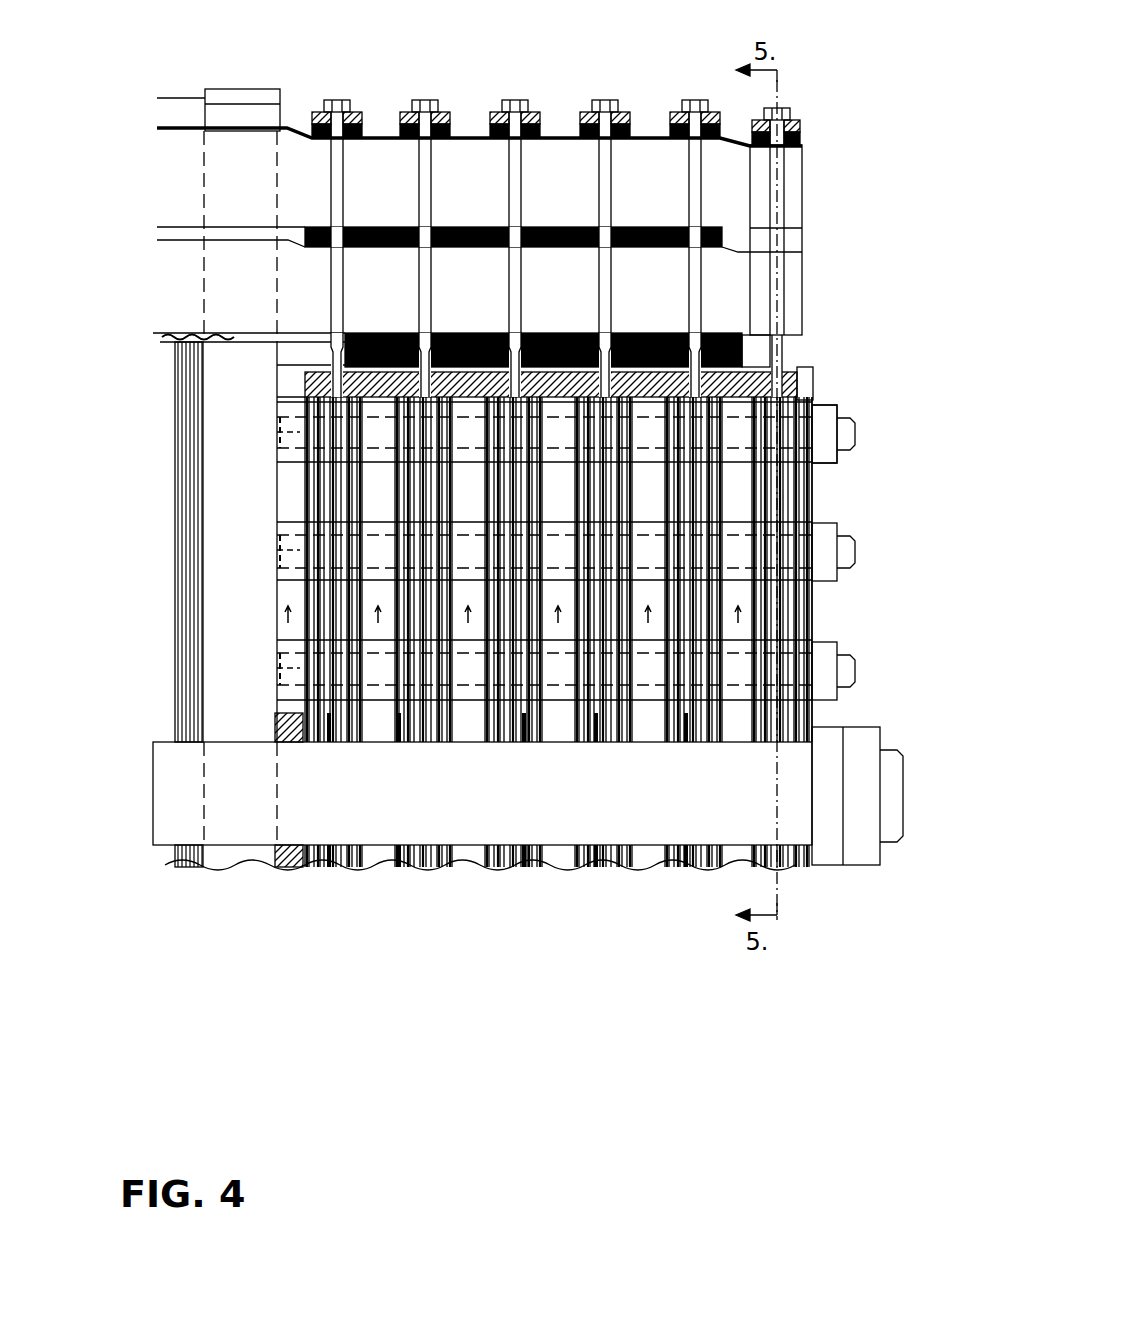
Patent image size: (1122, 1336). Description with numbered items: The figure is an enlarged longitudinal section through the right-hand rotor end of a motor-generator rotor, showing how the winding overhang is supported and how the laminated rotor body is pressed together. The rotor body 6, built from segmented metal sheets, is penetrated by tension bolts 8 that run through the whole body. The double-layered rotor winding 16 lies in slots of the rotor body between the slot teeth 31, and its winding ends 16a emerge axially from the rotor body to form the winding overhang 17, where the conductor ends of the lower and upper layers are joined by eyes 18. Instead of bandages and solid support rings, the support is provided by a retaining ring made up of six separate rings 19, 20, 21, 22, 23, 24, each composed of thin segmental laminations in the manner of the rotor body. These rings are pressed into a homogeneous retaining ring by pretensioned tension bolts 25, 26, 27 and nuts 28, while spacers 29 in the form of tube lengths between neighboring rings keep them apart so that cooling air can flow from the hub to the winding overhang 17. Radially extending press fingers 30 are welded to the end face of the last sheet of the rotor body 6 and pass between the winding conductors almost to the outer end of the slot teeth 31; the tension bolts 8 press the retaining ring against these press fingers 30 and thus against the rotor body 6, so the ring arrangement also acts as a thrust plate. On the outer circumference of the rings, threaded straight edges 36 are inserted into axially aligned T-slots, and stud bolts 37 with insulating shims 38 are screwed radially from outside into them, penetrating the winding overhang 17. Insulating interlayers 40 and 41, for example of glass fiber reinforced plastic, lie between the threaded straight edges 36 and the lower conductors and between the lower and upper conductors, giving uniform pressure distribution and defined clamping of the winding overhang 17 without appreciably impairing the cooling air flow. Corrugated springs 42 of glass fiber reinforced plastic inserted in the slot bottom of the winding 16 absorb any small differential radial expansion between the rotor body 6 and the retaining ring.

The rotor body 6 is at (186, 867).
The tension bolts 8 is at (462, 795).
The rotor winding 16 is at (378, 282).
The winding ends 16a is at (725, 280).
The winding overhang 17 is at (877, 119).
The eyes 18 is at (790, 170).
The ring 19 is at (329, 742).
The ring 20 is at (399, 742).
The ring 21 is at (524, 742).
The ring 22 is at (596, 742).
The ring 23 is at (686, 742).
The ring 24 is at (787, 713).
The tension bolt 25 is at (858, 437).
The tension bolt 26 is at (858, 552).
The tension bolt 27 is at (858, 667).
The nuts 28 is at (290, 648).
The spacers 29 is at (735, 648).
The press fingers 30 is at (228, 713).
The slot teeth 31 is at (182, 113).
The threaded straight edges 36 is at (805, 368).
The stud bolts 37 is at (695, 170).
The insulating shims 38 is at (452, 127).
The interlayer 40 is at (375, 330).
The interlayer 41 is at (383, 226).
The corrugated springs 42 is at (160, 340).